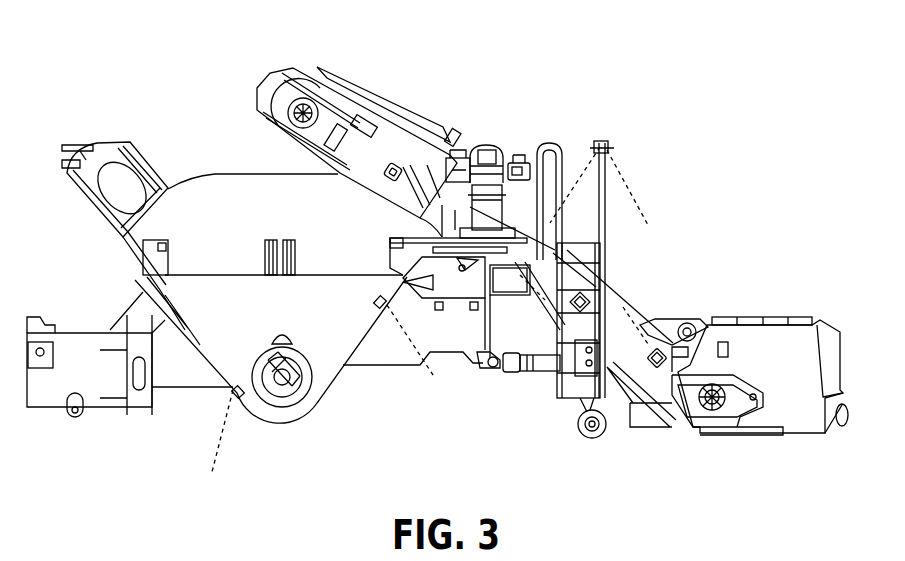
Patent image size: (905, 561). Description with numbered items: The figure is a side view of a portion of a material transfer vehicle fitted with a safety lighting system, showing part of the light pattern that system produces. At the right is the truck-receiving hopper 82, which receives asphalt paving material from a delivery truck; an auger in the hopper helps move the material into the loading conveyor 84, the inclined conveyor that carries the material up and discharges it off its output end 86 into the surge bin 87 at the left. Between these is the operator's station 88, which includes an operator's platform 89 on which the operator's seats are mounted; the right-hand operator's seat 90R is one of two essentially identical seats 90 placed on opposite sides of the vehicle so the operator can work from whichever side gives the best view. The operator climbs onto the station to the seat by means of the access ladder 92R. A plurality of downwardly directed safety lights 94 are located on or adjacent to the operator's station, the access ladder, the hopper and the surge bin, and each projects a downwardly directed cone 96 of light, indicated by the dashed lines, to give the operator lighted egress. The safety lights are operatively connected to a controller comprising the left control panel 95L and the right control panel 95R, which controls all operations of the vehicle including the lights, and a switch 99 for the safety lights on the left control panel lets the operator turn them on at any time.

The truck-receiving hopper 82 is at (802, 313).
The loading conveyor 84 is at (672, 310).
The output end 86 is at (268, 65).
The surge bin 87 is at (313, 403).
The operator's station 88 is at (612, 78).
The operator's platform 89 is at (450, 222).
The operator's seat 90 is at (740, 107).
The operator's seat 90R is at (488, 138).
The access ladder 92R is at (550, 385).
The safety lights 94 is at (375, 300).
The left control panel 95L is at (536, 165).
The right control panel 95R is at (458, 148).
The cone of light 96 is at (360, 330).
The switch 99 is at (523, 148).